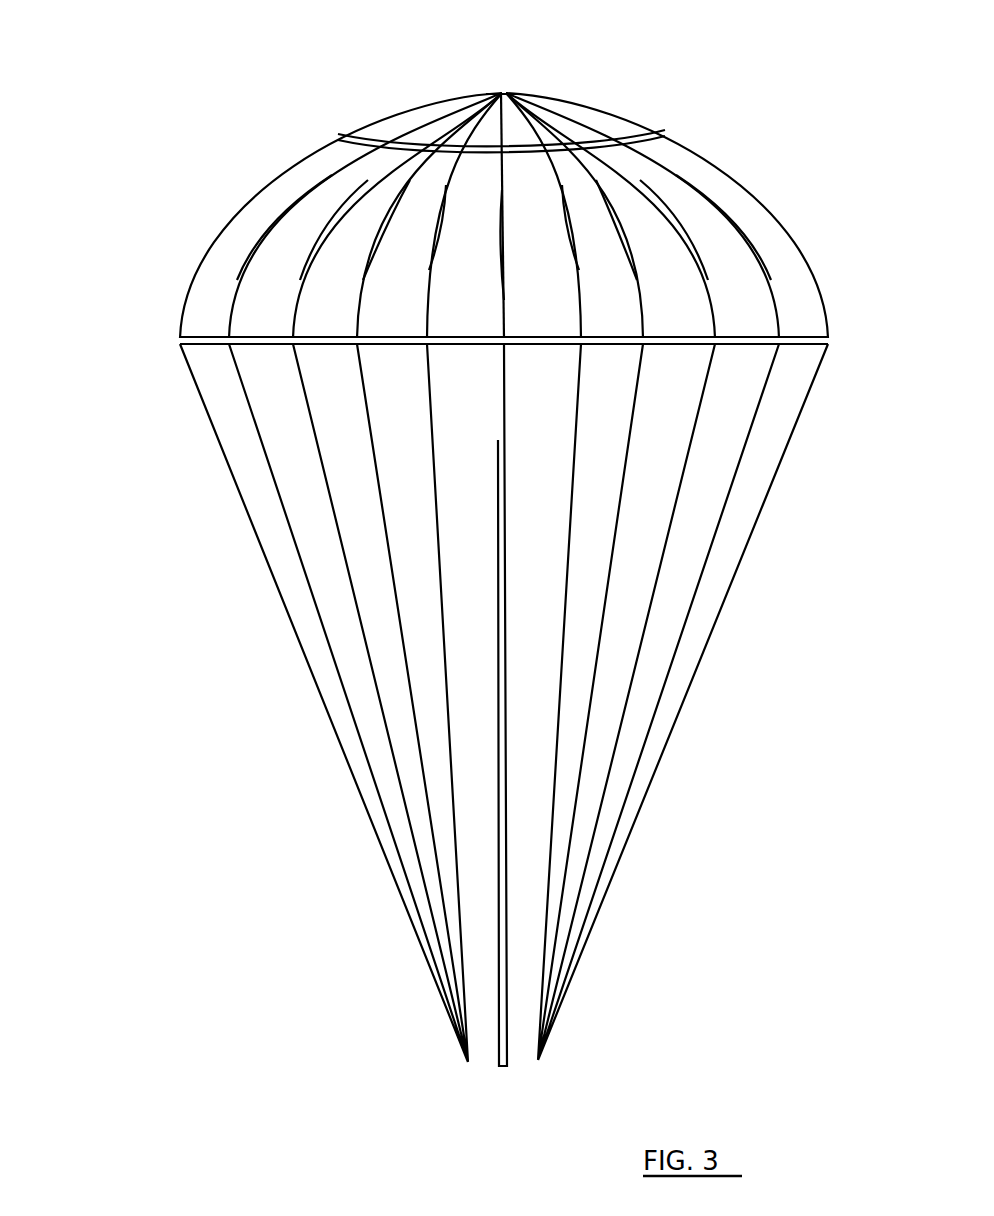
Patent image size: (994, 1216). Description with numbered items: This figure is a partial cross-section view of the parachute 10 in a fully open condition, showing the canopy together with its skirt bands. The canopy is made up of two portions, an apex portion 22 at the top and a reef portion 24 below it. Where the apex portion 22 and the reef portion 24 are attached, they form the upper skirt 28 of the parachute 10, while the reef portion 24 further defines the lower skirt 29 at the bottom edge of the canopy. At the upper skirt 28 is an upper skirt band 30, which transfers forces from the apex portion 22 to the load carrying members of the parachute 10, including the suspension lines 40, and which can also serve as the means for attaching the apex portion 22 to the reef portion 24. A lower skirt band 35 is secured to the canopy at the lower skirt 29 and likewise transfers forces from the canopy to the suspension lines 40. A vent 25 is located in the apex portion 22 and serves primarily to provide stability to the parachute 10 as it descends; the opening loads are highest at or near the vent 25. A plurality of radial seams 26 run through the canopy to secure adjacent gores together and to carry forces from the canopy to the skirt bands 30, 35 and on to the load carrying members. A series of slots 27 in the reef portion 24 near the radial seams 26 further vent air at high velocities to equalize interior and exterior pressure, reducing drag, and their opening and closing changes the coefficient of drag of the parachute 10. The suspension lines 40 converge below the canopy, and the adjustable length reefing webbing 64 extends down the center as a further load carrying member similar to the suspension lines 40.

The parachute 10 is at (278, 98).
The apex portion 22 is at (392, 113).
The reef portion 24 is at (248, 218).
The vent 25 is at (493, 88).
The radial seams 26 is at (423, 105).
The slots 27 is at (675, 228).
The upper skirt 28 is at (350, 135).
The lower skirt 29 is at (180, 340).
The upper skirt band 30 is at (633, 128).
The lower skirt band 35 is at (803, 332).
The suspension lines 40 is at (748, 544).
The reefing webbing 64 is at (507, 750).